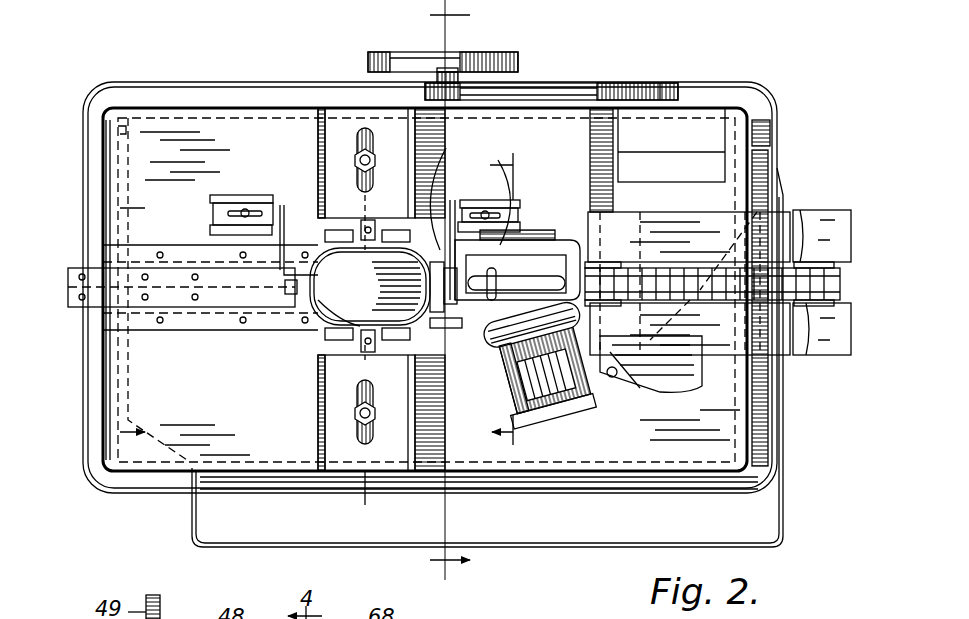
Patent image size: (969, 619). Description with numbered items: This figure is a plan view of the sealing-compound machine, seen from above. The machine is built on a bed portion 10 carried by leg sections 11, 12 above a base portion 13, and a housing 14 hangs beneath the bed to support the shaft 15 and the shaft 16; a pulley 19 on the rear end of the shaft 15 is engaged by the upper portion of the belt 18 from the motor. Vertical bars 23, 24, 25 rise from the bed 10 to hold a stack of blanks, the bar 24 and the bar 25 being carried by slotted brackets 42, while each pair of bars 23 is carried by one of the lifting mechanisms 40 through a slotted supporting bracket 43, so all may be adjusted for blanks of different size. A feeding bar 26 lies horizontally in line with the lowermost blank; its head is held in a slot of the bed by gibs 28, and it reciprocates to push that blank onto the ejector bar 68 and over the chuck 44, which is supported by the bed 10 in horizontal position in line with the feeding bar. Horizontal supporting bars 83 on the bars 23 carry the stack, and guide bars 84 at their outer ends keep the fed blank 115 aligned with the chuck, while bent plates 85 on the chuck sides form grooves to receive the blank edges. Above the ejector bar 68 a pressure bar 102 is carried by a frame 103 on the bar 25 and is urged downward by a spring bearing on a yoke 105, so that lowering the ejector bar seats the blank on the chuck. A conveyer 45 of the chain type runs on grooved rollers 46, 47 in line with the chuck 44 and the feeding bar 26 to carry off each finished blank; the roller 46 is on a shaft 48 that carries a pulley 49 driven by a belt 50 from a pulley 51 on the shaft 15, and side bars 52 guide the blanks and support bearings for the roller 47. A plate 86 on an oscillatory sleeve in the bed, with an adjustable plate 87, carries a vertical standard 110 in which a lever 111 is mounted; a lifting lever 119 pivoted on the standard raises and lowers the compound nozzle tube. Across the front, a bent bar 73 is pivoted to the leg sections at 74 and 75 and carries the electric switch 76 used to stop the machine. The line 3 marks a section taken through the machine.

The section line 3- 3 is at (450, 298).
The bed portion 10 is at (738, 441).
The leg section 11 is at (103, 150).
The leg section 12 is at (757, 108).
The base portion 13 is at (750, 481).
The housing 14 is at (517, 300).
The shaft 15 is at (456, 70).
The shaft 16 is at (386, 271).
The belt 18 is at (370, 63).
The pulley 19 is at (541, 57).
The vertical bars 23 is at (320, 232).
The vertical bar 24 is at (291, 224).
The vertical bar 25 is at (424, 200).
The feeding bar 26 is at (228, 300).
The gibs 28 is at (138, 258).
The lifting mechanisms 40 is at (346, 215).
The slotted brackets 42 is at (252, 200).
The slotted supporting bracket 43 is at (338, 130).
The chuck 44 is at (560, 252).
The conveyer 45 is at (790, 202).
The grooved roller 46 is at (620, 235).
The grooved roller 47 is at (816, 358).
The shaft 48 is at (612, 158).
The pulley 49 is at (577, 93).
The belt 50 is at (672, 92).
The pulley 51 is at (496, 56).
The side bars 52 is at (742, 275).
The ejector bar 68 is at (582, 205).
The bent bar 73 is at (786, 520).
The pivotal connection 74 is at (772, 131).
The pivotal connection 75 is at (126, 144).
The electric switch 76 is at (790, 308).
The horizontal supporting bars 83 is at (436, 330).
The guide bars 84 is at (462, 362).
The bent plates 85 is at (519, 222).
The plate 86 is at (622, 400).
The plate 87 is at (682, 378).
The pressure bar 102 is at (526, 272).
The frame 103 is at (642, 390).
The yoke 105 is at (480, 210).
The vertical standard 110 is at (576, 405).
The lever 111 is at (586, 400).
The blank 115 is at (314, 320).
The lifting lever 119 is at (536, 408).